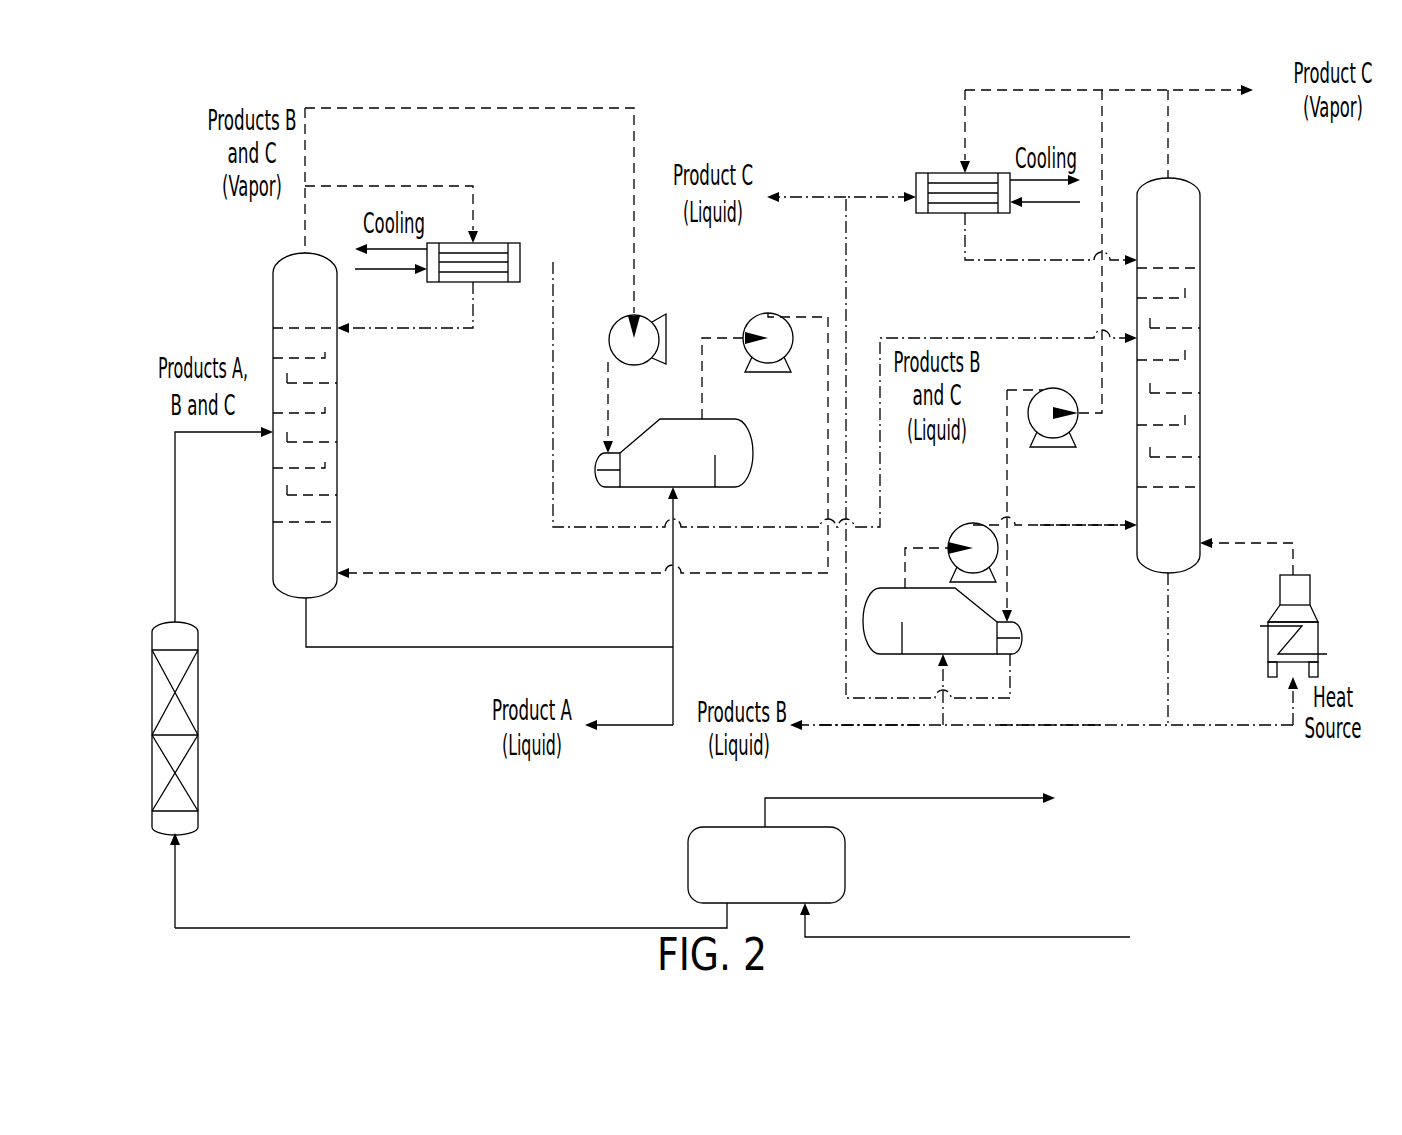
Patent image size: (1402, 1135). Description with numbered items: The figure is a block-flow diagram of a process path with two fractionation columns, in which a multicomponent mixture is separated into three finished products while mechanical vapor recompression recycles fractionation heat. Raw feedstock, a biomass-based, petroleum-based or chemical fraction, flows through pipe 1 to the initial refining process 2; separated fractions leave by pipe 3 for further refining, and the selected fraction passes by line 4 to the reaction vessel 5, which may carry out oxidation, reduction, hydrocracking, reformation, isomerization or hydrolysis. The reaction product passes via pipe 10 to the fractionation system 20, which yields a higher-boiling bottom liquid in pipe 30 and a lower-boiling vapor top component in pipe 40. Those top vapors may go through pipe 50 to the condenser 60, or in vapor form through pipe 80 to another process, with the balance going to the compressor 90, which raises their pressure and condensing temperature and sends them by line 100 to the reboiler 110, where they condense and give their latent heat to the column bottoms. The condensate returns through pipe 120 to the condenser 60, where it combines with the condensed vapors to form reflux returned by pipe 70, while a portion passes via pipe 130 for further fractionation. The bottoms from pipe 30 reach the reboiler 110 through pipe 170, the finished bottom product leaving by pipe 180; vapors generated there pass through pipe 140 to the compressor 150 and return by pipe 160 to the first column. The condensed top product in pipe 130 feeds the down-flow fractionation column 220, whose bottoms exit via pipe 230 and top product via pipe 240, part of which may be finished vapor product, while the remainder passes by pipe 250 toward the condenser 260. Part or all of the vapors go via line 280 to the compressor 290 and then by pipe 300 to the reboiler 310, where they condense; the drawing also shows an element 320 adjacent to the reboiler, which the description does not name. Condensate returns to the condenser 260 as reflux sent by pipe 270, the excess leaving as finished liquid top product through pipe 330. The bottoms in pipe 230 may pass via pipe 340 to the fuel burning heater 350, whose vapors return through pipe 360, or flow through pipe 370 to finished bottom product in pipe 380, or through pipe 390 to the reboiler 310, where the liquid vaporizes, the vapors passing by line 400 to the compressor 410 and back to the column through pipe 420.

The pipe 1 is at (870, 935).
The initial refining process 2 is at (688, 845).
The pipe 3 is at (765, 808).
The line 4 is at (610, 927).
The reaction vessel 5 is at (198, 695).
The pipe 10 is at (232, 433).
The fractionation system 20 is at (340, 480).
The pipe 30 is at (305, 630).
The pipe 40 is at (303, 240).
The pipe 50 is at (383, 186).
The condenser 60 is at (492, 243).
The pipe 70 is at (462, 330).
The pipe 80 is at (640, 130).
The compressor 90 is at (640, 316).
The line 100 is at (618, 410).
The reboiler 110 is at (748, 420).
The pipe 120 is at (563, 527).
The pipe 130 is at (632, 530).
The pipe 140 is at (716, 336).
The compressor 150 is at (758, 316).
The pipe 160 is at (826, 455).
The pipe 170 is at (675, 597).
The pipe 180 is at (640, 728).
The fractionation column 220 is at (1202, 345).
The pipe 230 is at (1172, 618).
The pipe 240 is at (1172, 147).
The pipe 250 is at (1135, 98).
The condenser 260 is at (934, 172).
The pipe 270 is at (962, 253).
The line 280 is at (1100, 133).
The compressor 290 is at (1076, 425).
The pipe 300 is at (1010, 510).
The reboiler 310 is at (1022, 630).
The separator drum 320 is at (1013, 680).
The pipe 330 is at (850, 192).
The pipe 340 is at (1218, 723).
The fuel burning heater 350 is at (1318, 612).
The pipe 360 is at (1267, 540).
The pipe 370 is at (1033, 728).
The pipe 380 is at (873, 728).
The pipe 390 is at (935, 686).
The line 400 is at (916, 545).
The compressor 410 is at (976, 523).
The pipe 420 is at (1087, 530).